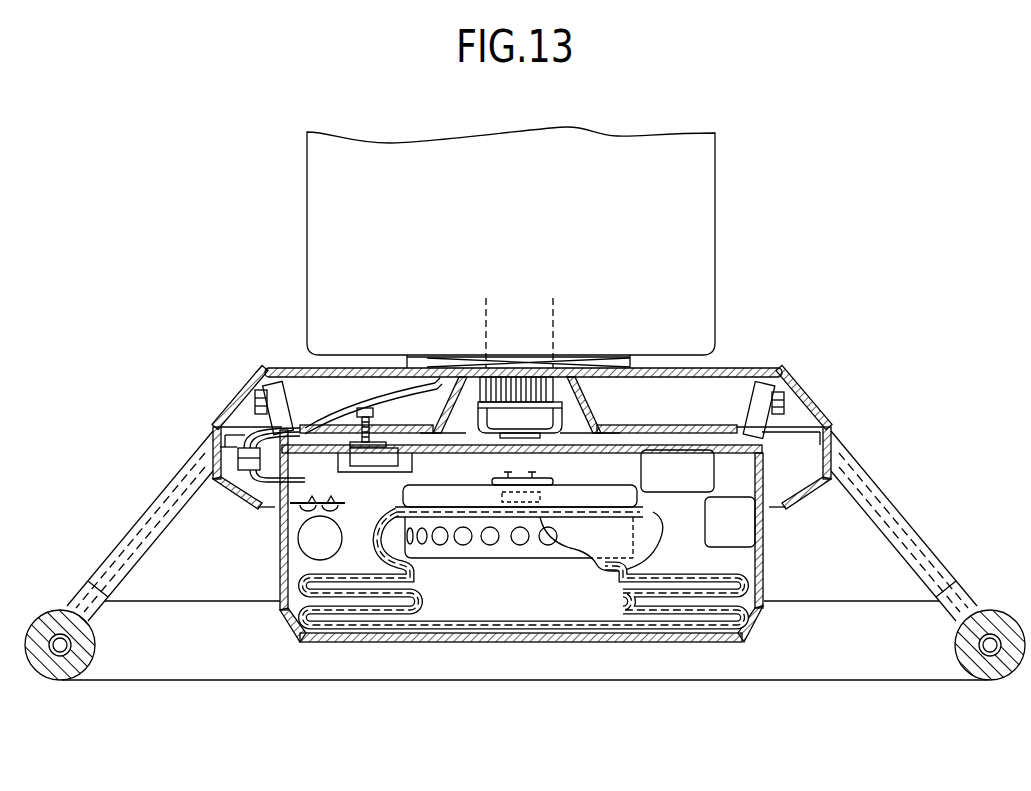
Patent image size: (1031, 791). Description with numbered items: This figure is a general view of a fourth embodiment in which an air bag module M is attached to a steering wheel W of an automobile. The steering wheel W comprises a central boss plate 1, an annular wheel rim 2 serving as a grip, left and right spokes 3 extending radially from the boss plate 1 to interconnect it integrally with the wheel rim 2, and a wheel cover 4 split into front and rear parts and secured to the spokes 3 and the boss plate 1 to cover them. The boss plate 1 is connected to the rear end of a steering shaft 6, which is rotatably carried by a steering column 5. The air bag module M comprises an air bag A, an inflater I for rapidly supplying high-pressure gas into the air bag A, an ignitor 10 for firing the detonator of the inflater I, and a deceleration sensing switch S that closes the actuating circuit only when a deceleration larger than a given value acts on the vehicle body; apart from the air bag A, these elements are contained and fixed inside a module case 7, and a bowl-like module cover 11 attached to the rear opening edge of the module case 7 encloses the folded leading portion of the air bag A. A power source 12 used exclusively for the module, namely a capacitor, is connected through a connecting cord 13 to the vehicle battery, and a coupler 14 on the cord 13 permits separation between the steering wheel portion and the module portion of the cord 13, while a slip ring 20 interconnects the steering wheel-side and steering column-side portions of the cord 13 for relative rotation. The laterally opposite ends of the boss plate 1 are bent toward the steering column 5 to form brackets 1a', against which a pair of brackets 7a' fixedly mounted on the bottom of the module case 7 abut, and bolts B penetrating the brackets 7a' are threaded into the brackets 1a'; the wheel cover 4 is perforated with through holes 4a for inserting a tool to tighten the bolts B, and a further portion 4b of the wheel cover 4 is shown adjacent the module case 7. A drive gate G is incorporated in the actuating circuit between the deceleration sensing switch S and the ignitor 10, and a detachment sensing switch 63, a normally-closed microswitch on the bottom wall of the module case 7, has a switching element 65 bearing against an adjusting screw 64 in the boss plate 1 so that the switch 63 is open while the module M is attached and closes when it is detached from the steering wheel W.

The boss plate 1 is at (629, 424).
The brackets 1a' is at (521, 385).
The wheel rim 2 is at (56, 681).
The spokes 3 is at (138, 517).
The wheel cover 4 is at (502, 468).
The through holes 4a is at (216, 427).
The side cover bottom flange 4b is at (767, 512).
The steering column 5 is at (511, 242).
The steering shaft 6 is at (555, 320).
The module case 7 is at (766, 483).
The brackets 7a' is at (522, 385).
The ignitor 10 is at (545, 500).
The module cover 11 is at (756, 627).
The power source 12 is at (312, 549).
The connecting cord 13 is at (265, 509).
The coupler 14 is at (245, 471).
The slip ring 20 is at (630, 368).
The detachment sensing switch 63 is at (373, 467).
The adjusting screw 64 is at (374, 413).
The switching element 65 is at (408, 432).
The air bag A is at (620, 599).
The bolts B is at (255, 398).
The drive gate G is at (669, 485).
The inflater I is at (469, 561).
The air bag module M is at (281, 622).
The deceleration sensing switch S is at (737, 535).
The steering wheel W is at (568, 684).